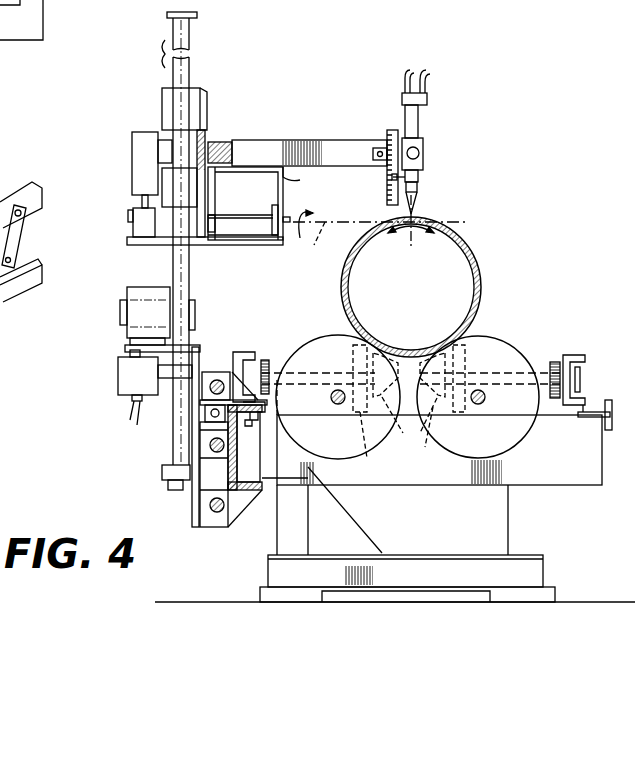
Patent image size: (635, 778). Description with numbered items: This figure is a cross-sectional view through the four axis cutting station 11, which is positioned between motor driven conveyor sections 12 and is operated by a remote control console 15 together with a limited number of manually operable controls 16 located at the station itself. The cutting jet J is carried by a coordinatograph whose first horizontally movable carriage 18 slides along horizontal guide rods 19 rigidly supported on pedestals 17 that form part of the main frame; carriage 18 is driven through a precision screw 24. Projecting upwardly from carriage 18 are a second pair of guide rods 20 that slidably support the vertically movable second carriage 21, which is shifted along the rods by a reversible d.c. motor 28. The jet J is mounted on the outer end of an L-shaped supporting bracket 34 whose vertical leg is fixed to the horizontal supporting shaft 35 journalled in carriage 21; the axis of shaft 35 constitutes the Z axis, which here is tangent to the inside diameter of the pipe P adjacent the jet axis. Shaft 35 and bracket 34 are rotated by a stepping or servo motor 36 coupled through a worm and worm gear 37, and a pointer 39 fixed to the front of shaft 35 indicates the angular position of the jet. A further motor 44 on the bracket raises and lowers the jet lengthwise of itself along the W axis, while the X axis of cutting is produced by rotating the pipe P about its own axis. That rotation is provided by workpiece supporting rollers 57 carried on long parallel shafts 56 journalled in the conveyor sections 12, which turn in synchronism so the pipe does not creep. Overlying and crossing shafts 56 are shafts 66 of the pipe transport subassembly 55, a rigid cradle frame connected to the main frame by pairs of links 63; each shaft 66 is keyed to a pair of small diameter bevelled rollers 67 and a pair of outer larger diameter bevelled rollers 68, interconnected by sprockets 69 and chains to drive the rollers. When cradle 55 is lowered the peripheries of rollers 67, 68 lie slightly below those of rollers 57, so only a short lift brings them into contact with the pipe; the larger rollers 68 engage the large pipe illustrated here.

The cutting station 11 is at (520, 150).
The conveyor section 12 is at (609, 403).
The remote control console 15 is at (53, 20).
The manually operable controls 16 is at (118, 380).
The pedestal 17 is at (283, 527).
The first horizontally movable carriage 18 is at (191, 502).
The horizontal guide rod 19 is at (218, 513).
The second guide rod 20 is at (178, 270).
The vertically movable second carriage 21 is at (207, 100).
The precision screw 24 is at (208, 445).
The reversible d.c. motor 28 is at (138, 328).
The L-shaped supporting bracket 34 is at (305, 168).
The horizontal supporting shaft 35 is at (243, 217).
The stepping or servo motor 36 is at (140, 155).
The worm and worm gear 37 is at (138, 227).
The pointer 39 is at (129, 211).
The stepping or servo motor 44 is at (230, 142).
The pipe transport subassembly 55 is at (247, 352).
The shaft 56 is at (485, 425).
The workpiece supporting roller 57 is at (500, 355).
The link 63 is at (16, 232).
The shaft 66 is at (551, 372).
The small diameter bevelled roller 67 is at (410, 428).
The larger diameter bevelled roller 68 is at (402, 445).
The sprocket 69 is at (556, 362).
The cutting jet J is at (427, 202).
The pipe P is at (473, 253).
The X axis X is at (380, 243).
The Z axis Z is at (312, 240).